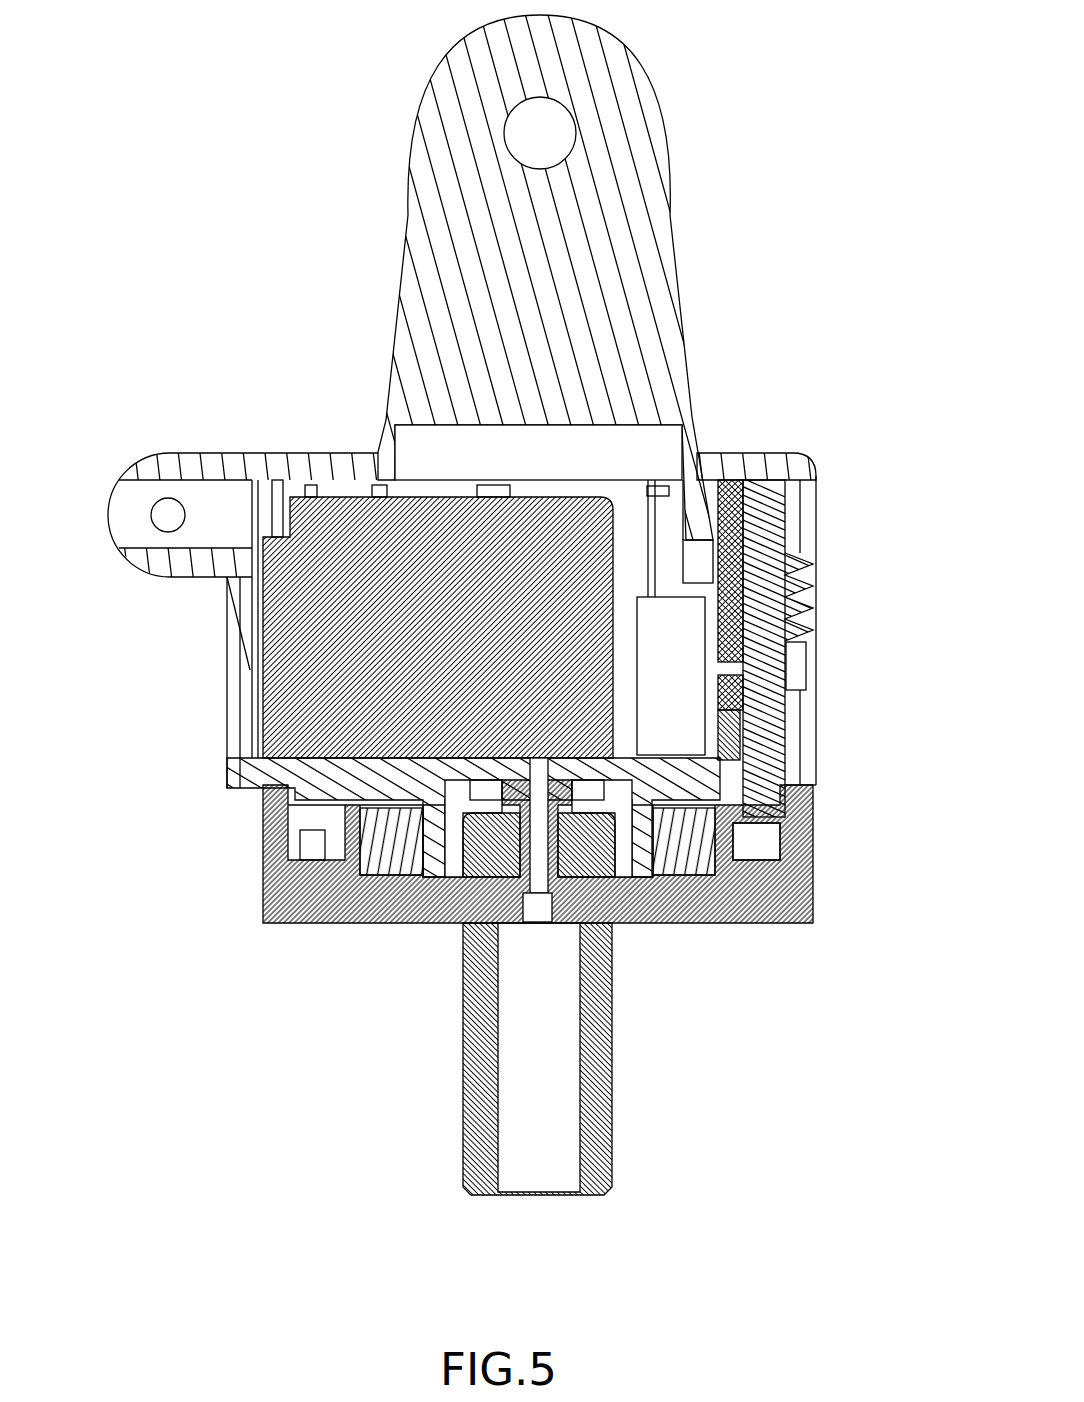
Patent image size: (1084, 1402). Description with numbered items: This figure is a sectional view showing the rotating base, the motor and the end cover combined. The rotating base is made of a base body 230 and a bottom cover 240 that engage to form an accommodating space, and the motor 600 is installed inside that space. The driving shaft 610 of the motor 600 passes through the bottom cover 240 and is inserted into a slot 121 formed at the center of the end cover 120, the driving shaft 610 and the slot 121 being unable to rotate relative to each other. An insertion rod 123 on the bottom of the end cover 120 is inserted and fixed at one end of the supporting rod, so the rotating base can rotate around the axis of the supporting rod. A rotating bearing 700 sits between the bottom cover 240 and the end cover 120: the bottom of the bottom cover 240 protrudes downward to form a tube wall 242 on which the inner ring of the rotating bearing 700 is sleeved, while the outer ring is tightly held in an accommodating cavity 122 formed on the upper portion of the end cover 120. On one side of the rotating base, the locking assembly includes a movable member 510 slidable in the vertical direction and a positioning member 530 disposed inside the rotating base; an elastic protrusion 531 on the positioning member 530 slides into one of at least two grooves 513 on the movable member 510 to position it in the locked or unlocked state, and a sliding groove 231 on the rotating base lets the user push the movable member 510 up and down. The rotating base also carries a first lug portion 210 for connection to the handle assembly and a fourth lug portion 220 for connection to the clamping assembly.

The end cover 120 is at (263, 880).
The slot 121 is at (497, 906).
The accommodating cavity 122 is at (773, 895).
The insertion rod 123 is at (473, 1007).
The first lug portion 210 is at (162, 490).
The fourth lug portion 220 is at (545, 133).
The base body 230 is at (227, 620).
The sliding groove 231 is at (800, 700).
The bottom cover 240 is at (292, 812).
The tube wall 242 is at (642, 848).
The movable member 510 is at (783, 540).
The grooves 513 is at (803, 593).
The positioning member 530 is at (807, 473).
The elastic protrusion 531 is at (805, 662).
The motor 600 is at (318, 633).
The driving shaft 610 is at (540, 850).
The rotating bearing 700 is at (688, 843).